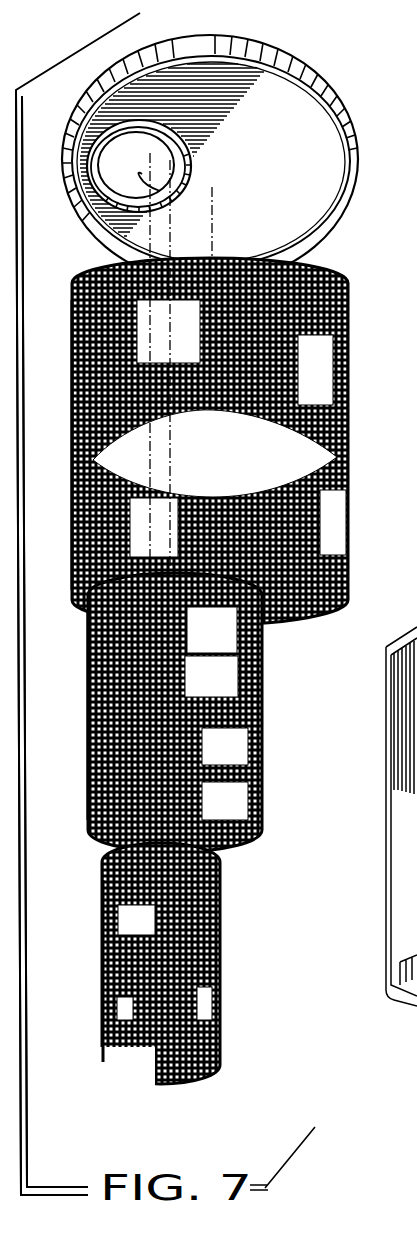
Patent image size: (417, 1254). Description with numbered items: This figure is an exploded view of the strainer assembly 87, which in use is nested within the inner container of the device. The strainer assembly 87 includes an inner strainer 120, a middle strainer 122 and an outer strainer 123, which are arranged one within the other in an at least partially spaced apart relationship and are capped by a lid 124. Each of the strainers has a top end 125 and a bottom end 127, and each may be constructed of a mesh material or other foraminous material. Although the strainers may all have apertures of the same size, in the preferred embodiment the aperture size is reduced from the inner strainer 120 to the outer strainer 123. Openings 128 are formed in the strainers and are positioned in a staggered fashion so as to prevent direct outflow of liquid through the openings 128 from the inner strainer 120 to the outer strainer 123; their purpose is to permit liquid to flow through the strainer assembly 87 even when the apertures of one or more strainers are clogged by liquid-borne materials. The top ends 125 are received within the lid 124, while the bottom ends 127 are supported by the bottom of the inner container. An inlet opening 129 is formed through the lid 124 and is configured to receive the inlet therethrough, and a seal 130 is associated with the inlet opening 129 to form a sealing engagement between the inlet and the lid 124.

The lid 124 is at (313, 110).
The seal 130 is at (191, 168).
The inlet opening 129 is at (160, 191).
The outer strainer 123 is at (349, 367).
The middle strainer 122 is at (262, 658).
The inner strainer 120 is at (220, 915).
The top end 125 is at (341, 316).
The bottom end 127 is at (75, 550).
The openings 128 is at (330, 386).
The strainer assembly 87 is at (89, 1137).